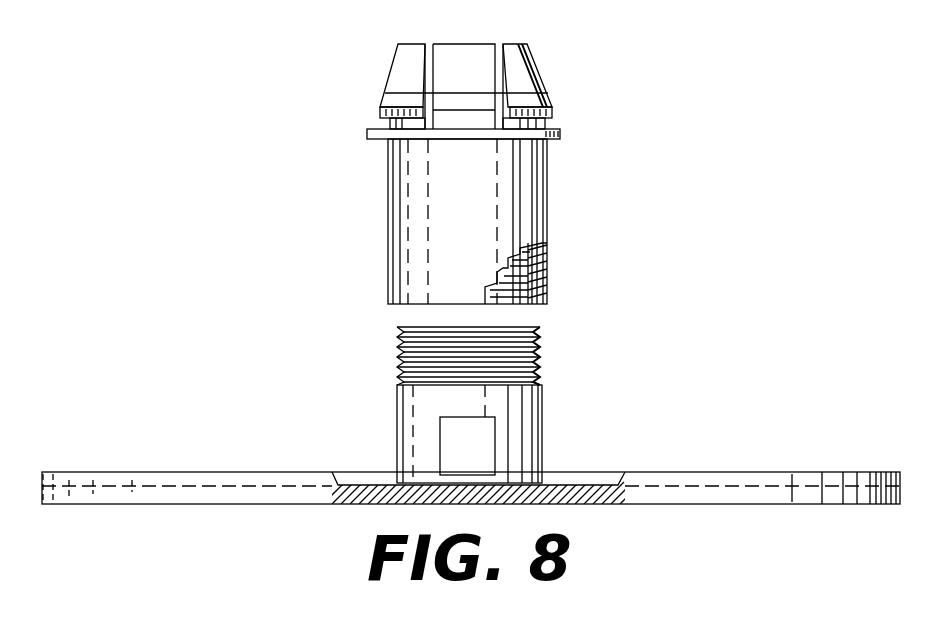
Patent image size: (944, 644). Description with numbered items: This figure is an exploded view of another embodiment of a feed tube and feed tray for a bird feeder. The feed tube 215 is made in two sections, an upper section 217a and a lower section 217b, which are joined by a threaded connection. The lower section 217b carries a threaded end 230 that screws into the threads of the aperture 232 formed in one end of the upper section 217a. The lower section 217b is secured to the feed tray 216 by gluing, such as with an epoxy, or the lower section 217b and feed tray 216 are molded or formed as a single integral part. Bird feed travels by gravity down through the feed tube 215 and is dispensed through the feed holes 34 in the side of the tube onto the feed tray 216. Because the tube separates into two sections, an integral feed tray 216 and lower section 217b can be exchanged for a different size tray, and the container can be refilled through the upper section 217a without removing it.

The feed tube 215 is at (610, 238).
The feed tray 216 is at (828, 472).
The upper section 217a is at (547, 190).
The lower section 217b is at (543, 410).
The threaded end 230 is at (540, 360).
The aperture 232 is at (517, 304).
The feed holes 34 is at (473, 453).